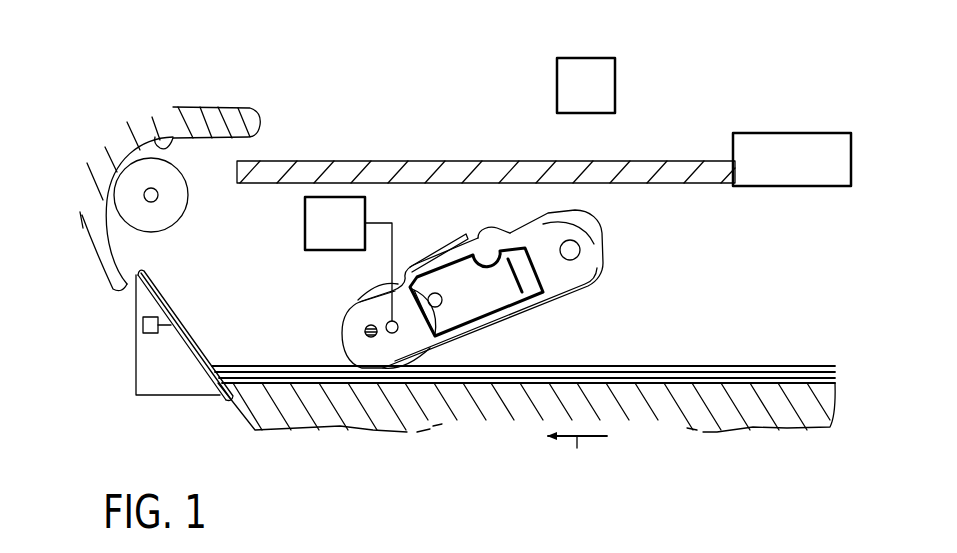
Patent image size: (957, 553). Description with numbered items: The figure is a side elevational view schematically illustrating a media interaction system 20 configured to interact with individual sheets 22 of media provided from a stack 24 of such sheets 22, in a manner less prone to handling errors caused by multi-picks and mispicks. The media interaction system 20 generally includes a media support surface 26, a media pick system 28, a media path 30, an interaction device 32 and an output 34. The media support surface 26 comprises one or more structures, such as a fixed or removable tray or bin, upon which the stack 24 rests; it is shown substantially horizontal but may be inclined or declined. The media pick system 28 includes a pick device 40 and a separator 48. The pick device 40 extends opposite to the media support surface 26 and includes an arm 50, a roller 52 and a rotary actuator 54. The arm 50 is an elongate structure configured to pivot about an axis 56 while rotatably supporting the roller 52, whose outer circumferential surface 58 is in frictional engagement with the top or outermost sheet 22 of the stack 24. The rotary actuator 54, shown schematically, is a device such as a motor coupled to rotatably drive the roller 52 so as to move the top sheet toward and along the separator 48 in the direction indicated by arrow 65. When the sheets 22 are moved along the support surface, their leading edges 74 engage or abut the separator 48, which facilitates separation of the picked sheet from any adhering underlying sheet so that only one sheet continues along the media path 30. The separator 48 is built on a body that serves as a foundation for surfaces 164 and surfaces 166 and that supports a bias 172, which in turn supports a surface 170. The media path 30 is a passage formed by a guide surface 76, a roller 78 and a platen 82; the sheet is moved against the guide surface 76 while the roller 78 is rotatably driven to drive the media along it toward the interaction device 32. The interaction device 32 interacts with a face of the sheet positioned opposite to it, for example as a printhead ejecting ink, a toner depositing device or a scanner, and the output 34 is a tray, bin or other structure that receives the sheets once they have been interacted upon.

The media interaction system 20 is at (116, 119).
The sheets 22 is at (795, 365).
The stack 24 is at (752, 361).
The media support surface 26 is at (707, 366).
The media pick system 28 is at (445, 240).
The media path 30 is at (112, 173).
The interaction device 32 is at (617, 83).
The output 34 is at (778, 118).
The pick device 40 is at (512, 230).
The separator 48 is at (131, 394).
The arm 50 is at (505, 316).
The roller 52 is at (376, 290).
The rotary actuator 54 is at (305, 223).
The axis 56 is at (572, 250).
The outer circumferential surface 58 is at (358, 298).
The arrow 65 is at (577, 447).
The leading edges 74 is at (217, 393).
The guide surface 76 is at (169, 110).
The roller 78 is at (173, 173).
The platen 82 is at (509, 160).
The surfaces 164 is at (182, 348).
The surfaces 166 is at (140, 287).
The surface 170 is at (188, 343).
The bias 172 is at (147, 333).